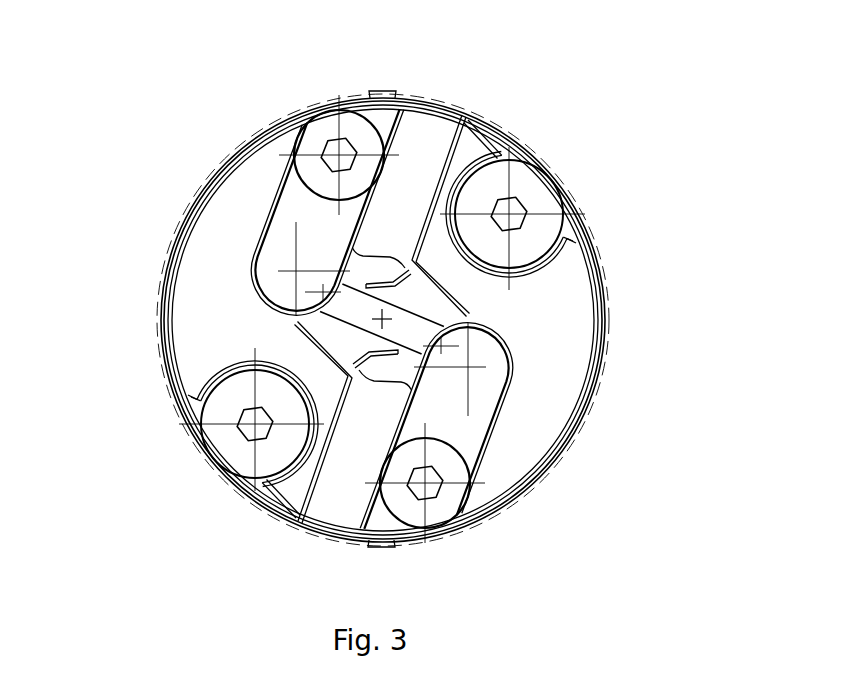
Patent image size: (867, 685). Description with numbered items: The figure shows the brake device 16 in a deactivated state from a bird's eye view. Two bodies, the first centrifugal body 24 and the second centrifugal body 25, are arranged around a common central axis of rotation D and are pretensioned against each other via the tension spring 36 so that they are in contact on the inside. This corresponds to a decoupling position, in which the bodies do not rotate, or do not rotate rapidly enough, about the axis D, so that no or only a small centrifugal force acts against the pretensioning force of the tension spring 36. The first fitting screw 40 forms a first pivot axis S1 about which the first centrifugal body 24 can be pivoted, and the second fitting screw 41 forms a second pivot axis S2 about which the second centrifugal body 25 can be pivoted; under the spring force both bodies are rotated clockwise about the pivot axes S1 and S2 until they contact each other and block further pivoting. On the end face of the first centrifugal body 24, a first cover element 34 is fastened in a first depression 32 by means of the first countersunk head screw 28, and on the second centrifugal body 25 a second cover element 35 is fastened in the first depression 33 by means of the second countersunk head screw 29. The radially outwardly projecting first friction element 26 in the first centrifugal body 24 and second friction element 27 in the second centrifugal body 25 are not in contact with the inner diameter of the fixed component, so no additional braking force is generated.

The brake device 16 is at (622, 210).
The first centrifugal body 24 is at (210, 243).
The second centrifugal body 25 is at (537, 307).
The first friction element 26 is at (370, 91).
The second friction element 27 is at (410, 545).
The first countersunk head screw 28 is at (327, 130).
The second countersunk head screw 29 is at (437, 507).
The first depression 32 is at (248, 276).
The first depression 33 is at (507, 407).
The first cover element 34 is at (297, 220).
The second cover element 35 is at (460, 433).
The tension spring 36 is at (400, 327).
The first fitting screw 40 is at (233, 455).
The second fitting screw 41 is at (547, 185).
The first pivot axis S1 is at (250, 427).
The second pivot axis S2 is at (510, 207).
The central axis of rotation D is at (363, 318).